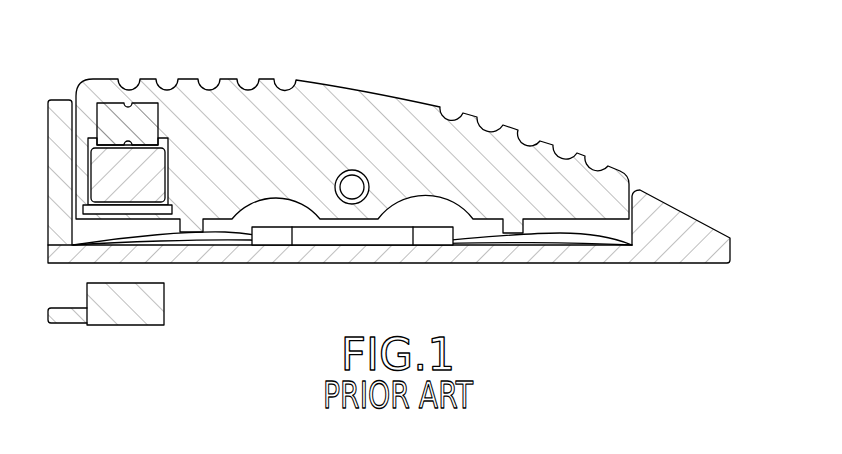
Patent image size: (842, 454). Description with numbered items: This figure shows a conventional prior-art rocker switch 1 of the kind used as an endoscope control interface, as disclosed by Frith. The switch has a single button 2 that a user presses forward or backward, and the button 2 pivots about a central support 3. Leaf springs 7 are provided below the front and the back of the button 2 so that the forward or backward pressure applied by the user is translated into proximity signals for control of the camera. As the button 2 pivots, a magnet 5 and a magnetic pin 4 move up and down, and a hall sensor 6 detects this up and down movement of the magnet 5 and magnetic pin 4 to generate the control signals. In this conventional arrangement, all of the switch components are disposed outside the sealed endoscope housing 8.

The rocker switch 1 is at (400, 187).
The button 2 is at (342, 86).
The central support 3 is at (358, 170).
The magnetic pin 4 is at (117, 123).
The magnet 5 is at (115, 185).
The hall sensor 6 is at (117, 325).
The leaf springs 7 is at (237, 237).
The sealed endoscope housing 8 is at (732, 258).